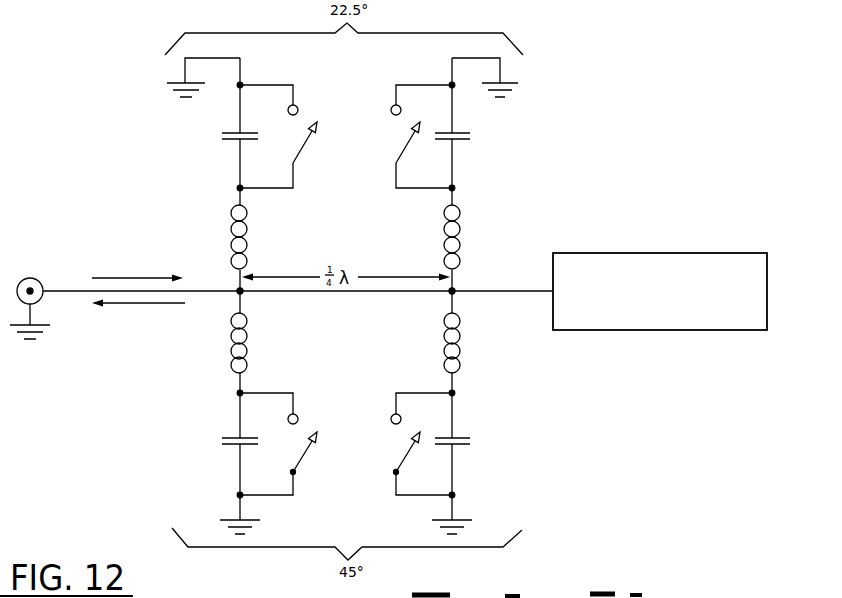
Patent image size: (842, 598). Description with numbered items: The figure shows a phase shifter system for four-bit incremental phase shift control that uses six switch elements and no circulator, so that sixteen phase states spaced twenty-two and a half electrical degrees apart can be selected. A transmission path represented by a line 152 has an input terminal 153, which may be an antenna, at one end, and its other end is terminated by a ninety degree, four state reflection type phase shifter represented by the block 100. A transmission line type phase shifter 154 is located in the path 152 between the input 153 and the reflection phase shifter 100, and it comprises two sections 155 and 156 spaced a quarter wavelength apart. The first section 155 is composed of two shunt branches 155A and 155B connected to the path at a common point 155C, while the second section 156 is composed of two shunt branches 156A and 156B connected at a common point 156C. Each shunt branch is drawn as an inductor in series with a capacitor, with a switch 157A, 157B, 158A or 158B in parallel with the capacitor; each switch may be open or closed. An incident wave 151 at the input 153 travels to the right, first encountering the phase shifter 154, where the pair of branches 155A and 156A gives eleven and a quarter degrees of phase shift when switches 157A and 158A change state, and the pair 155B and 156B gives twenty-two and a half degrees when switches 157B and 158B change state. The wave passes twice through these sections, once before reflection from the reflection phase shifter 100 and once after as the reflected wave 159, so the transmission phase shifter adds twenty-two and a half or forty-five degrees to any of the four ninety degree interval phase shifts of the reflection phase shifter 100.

The reflection type phase shifter 100 is at (679, 237).
The incident wave 151 is at (133, 273).
The transmission path 152 is at (208, 285).
The input terminal 153 is at (33, 279).
The transmission line type phase shifter 154 is at (184, 135).
The first section 155 is at (366, 224).
The shunt branch 155A is at (247, 198).
The shunt branch 155B is at (257, 378).
The common point 155C is at (243, 293).
The second section 156 is at (378, 425).
The shunt branch 156A is at (450, 203).
The shunt branch 156B is at (437, 378).
The common point 156C is at (447, 293).
The switch 157A is at (288, 137).
The switch 157B is at (297, 435).
The switch 158A is at (400, 128).
The switch 158B is at (402, 442).
The reflected wave 159 is at (133, 307).